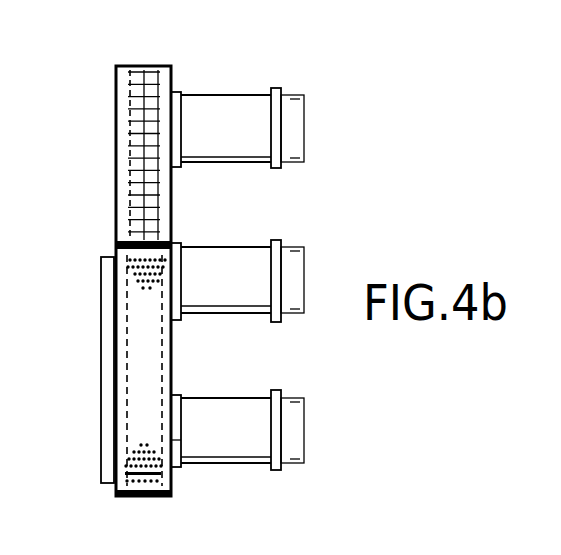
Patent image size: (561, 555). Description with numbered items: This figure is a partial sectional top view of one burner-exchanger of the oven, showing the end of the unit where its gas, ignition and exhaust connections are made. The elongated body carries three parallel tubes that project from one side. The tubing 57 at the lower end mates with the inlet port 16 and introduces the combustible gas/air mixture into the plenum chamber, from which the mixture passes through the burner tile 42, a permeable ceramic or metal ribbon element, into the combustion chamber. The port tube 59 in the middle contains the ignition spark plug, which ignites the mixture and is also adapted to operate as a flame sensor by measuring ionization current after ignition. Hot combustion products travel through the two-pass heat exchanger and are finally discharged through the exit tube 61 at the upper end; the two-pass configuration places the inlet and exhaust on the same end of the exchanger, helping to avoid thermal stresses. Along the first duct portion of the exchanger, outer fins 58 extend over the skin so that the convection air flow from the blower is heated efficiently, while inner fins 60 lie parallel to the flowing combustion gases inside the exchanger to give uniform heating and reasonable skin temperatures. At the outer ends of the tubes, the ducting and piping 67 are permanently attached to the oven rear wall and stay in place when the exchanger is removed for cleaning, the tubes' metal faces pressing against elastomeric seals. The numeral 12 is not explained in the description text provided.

The housing body 12 is at (101, 443).
The inlet port 16 is at (177, 445).
The burner tile 42 is at (120, 253).
The tubing 57 is at (226, 407).
The outer fins 58 is at (104, 328).
The port tube 59 is at (205, 255).
The inner fins 60 is at (138, 72).
The exit tube 61 is at (232, 107).
The ducting and piping 67 is at (280, 92).